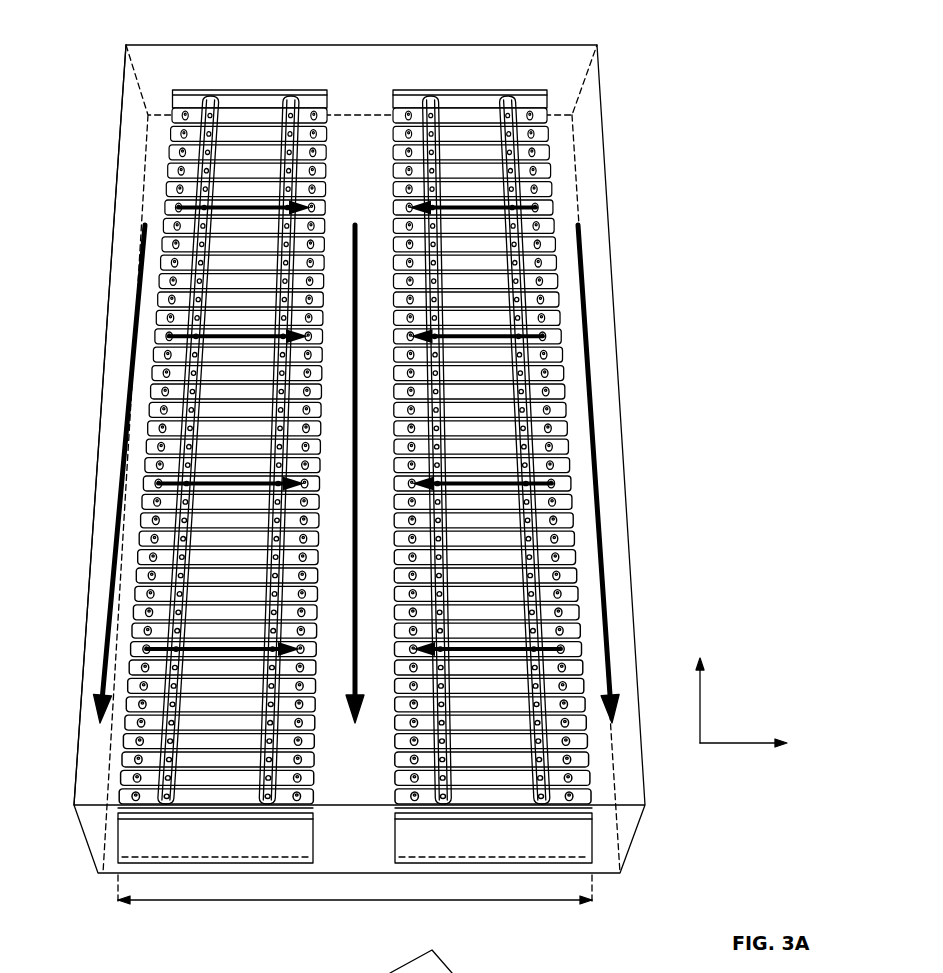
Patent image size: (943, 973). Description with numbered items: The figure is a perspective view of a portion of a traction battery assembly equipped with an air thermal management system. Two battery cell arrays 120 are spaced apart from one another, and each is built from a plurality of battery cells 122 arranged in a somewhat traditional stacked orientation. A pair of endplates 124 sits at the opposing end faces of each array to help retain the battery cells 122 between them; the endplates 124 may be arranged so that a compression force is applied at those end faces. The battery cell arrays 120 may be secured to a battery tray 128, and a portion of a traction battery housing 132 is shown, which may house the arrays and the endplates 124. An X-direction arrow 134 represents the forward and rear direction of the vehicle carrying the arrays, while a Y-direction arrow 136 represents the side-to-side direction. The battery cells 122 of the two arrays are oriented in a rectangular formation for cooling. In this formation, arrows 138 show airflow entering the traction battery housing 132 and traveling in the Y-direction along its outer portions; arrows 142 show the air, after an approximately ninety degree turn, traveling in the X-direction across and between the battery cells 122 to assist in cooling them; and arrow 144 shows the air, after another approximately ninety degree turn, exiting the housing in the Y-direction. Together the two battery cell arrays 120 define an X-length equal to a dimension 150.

The battery cell array 120 is at (162, 172).
The battery cell 122 is at (193, 747).
The endplate 124 is at (250, 100).
The battery tray 128 is at (357, 86).
The traction battery housing 132 is at (115, 198).
The X-direction arrow 134 is at (740, 745).
The Y-direction arrow 136 is at (701, 697).
The airflow path arrows 138 is at (138, 270).
The airflow path arrows 142 is at (178, 336).
The airflow path arrow 144 is at (360, 242).
The dimension 150 is at (348, 900).